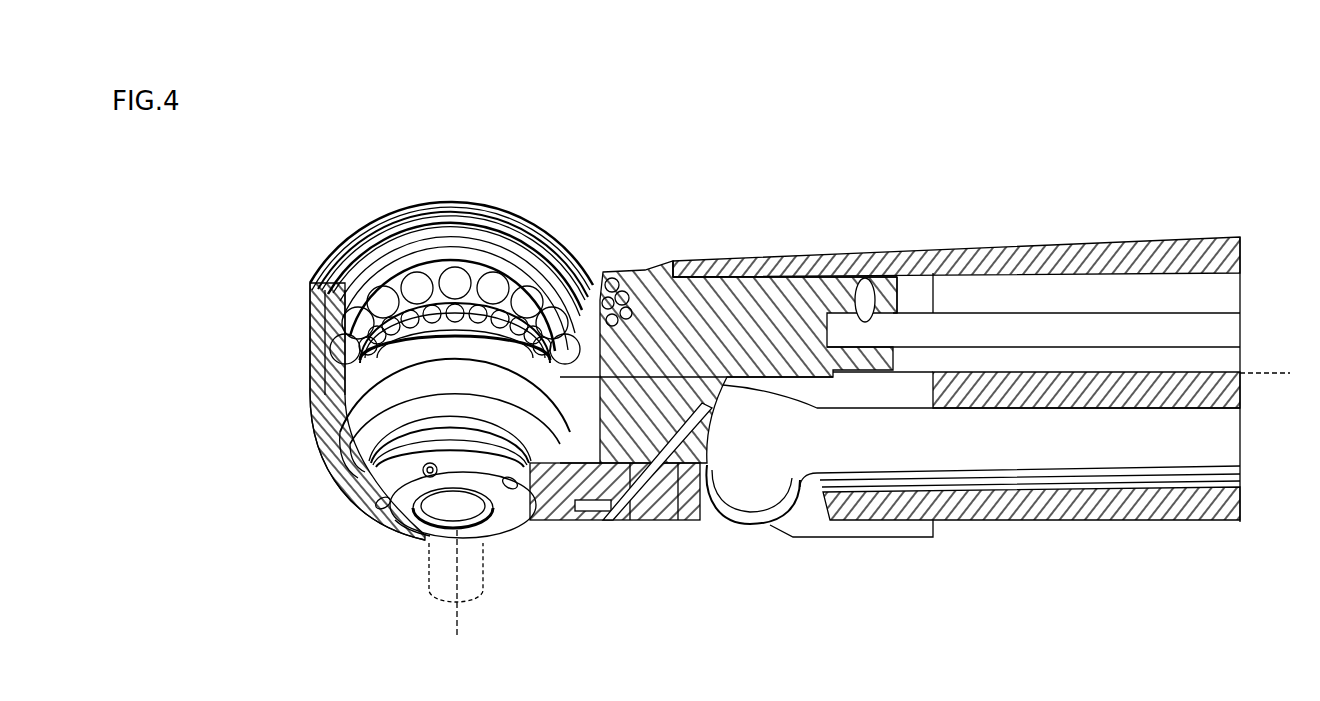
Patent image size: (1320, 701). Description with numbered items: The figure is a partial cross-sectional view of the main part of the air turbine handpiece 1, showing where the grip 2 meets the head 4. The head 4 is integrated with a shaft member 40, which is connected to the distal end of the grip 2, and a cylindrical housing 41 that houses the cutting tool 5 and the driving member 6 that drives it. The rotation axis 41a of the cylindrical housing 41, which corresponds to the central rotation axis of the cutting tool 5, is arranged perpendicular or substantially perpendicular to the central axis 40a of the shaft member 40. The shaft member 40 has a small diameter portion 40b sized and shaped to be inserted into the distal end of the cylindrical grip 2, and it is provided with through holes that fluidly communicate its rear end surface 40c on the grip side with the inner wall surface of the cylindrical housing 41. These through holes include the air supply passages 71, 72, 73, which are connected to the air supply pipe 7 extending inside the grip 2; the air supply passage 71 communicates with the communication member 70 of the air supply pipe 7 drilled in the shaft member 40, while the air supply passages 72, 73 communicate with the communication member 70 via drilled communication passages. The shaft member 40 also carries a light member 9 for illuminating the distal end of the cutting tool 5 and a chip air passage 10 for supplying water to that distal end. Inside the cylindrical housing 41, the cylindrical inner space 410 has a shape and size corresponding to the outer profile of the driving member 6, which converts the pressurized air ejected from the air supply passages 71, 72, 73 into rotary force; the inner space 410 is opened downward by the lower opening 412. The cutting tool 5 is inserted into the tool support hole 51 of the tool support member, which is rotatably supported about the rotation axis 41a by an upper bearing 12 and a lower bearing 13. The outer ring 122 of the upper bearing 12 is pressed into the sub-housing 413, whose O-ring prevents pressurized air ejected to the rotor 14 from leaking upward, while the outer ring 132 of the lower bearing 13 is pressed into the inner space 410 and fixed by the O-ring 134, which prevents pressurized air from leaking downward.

The air turbine handpiece 1 is at (1108, 222).
The grip 2 is at (1160, 520).
The head 4 is at (650, 262).
The cutting tool 5 is at (483, 580).
The driving member 6 is at (410, 287).
The air supply pipe 7 is at (1035, 313).
The light member 9 is at (993, 453).
The chip air passage 10 is at (637, 522).
The upper bearing 12 is at (577, 240).
The lower bearing 13 is at (338, 487).
The rotor 14 is at (308, 328).
The shaft member 40 is at (837, 290).
The central axis 40a is at (1253, 378).
The small diameter portion 40b is at (780, 280).
The rear end surface 40c is at (907, 300).
The cylindrical housing 41 is at (310, 322).
The rotation axis 41a is at (452, 622).
The tool support hole 51 is at (487, 533).
The communication member 70 is at (862, 308).
The air supply passage 71 is at (740, 280).
The air supply passage 72 is at (687, 277).
The air supply passage 73 is at (610, 272).
The outer ring 122 is at (520, 212).
The outer ring 132 is at (340, 467).
The O-ring 134 is at (342, 437).
The inner space 410 is at (307, 387).
The lower opening 412 is at (427, 527).
The sub-housing 413 is at (318, 258).